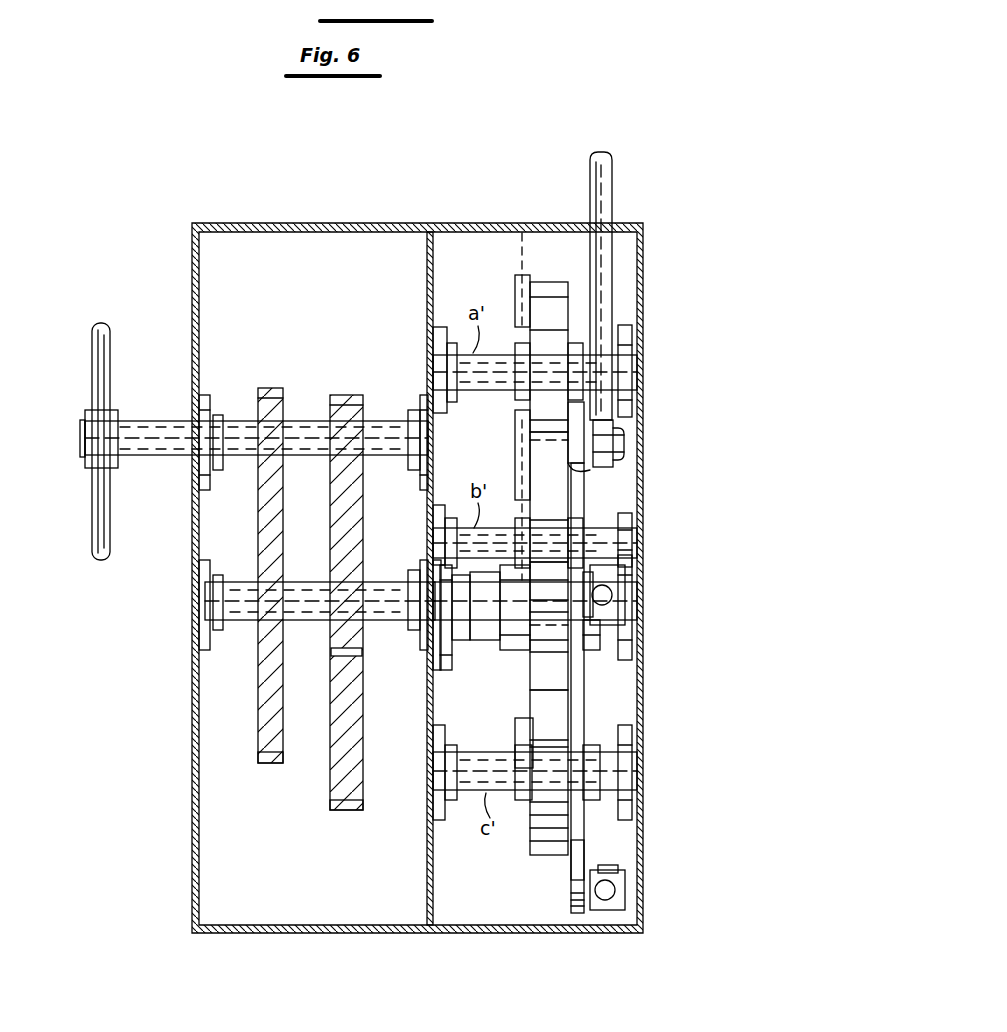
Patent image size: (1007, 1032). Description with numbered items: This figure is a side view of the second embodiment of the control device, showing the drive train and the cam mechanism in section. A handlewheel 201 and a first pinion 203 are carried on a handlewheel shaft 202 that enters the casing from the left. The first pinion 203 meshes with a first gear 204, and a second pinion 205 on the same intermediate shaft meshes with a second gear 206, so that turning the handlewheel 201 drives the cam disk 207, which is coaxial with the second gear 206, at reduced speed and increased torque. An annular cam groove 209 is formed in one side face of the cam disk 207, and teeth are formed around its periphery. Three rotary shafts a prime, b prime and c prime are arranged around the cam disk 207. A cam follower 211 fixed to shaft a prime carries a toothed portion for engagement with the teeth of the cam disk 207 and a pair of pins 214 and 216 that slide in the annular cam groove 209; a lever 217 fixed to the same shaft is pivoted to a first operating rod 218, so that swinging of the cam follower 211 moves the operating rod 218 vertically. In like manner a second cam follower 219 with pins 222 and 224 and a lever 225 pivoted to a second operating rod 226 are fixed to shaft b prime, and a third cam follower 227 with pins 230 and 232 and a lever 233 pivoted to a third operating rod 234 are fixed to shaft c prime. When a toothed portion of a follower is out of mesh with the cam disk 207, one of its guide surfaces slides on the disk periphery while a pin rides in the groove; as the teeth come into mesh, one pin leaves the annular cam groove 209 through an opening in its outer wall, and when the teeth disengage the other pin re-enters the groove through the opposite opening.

The handlewheel 201 is at (92, 343).
The handlewheel shaft 202 is at (150, 458).
The first pinion 203 is at (262, 388).
The first gear 204 is at (270, 764).
The second pinion 205 is at (330, 656).
The second gear 206 is at (340, 395).
The cam disk 207 is at (575, 680).
The annular cam groove 209 is at (530, 680).
The cam follower 211 is at (532, 294).
The pin 214 is at (530, 490).
The pin 216 is at (518, 275).
The lever 217 is at (586, 470).
The first operating rod 218 is at (612, 180).
The second cam follower 219 is at (576, 513).
The pin 222 is at (518, 647).
The pin 224 is at (527, 430).
The lever 225 is at (575, 614).
The second operating rod 226 is at (605, 595).
The third cam follower 227 is at (546, 856).
The pin 230 is at (360, 223).
The pin 232 is at (533, 733).
The lever 233 is at (585, 830).
The third operating rod 234 is at (620, 893).